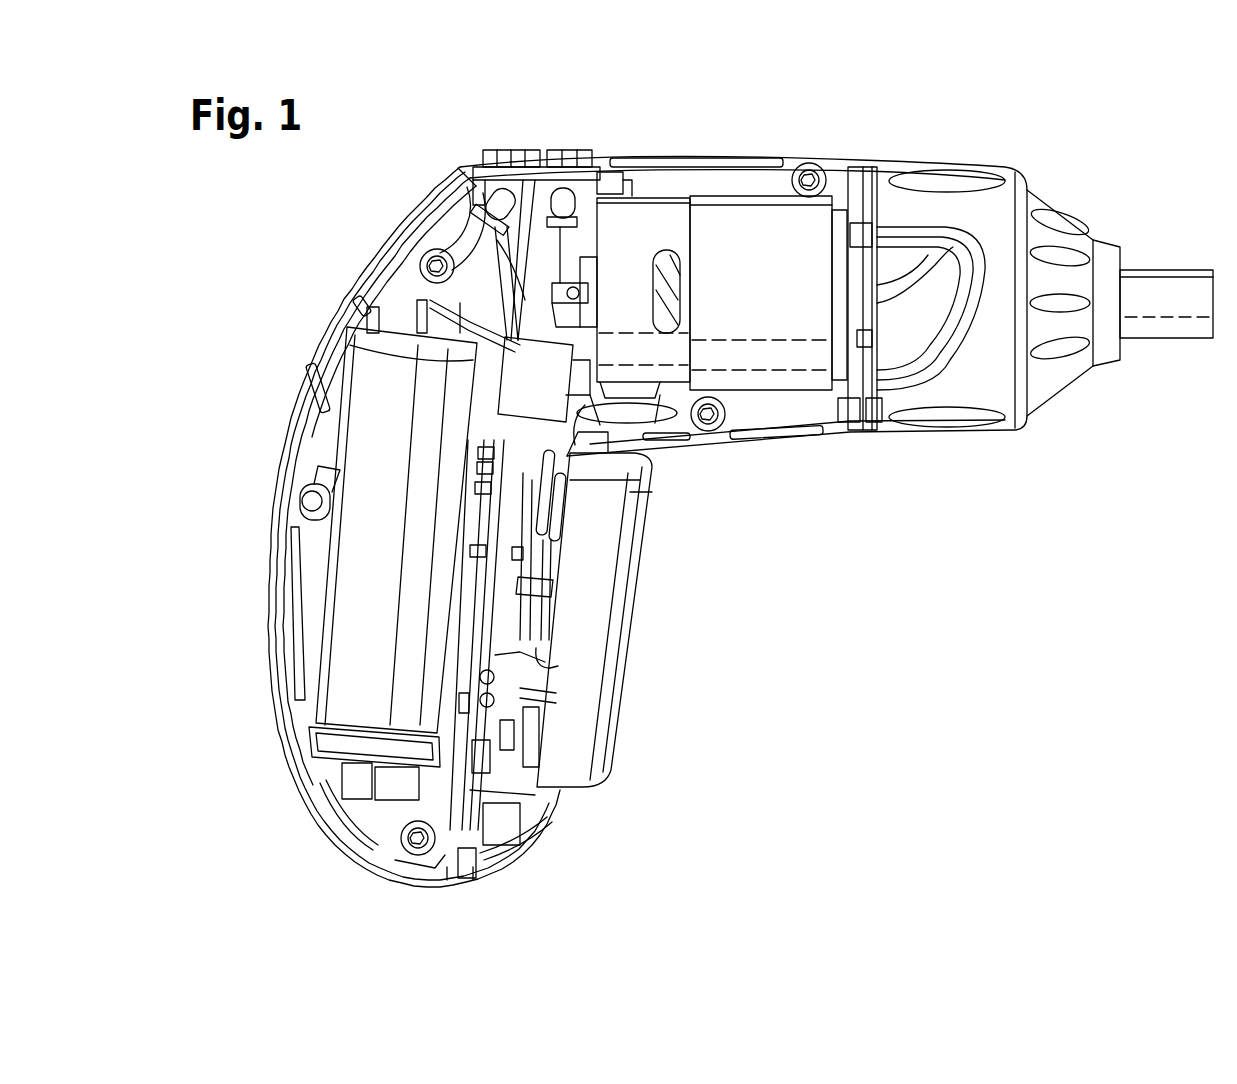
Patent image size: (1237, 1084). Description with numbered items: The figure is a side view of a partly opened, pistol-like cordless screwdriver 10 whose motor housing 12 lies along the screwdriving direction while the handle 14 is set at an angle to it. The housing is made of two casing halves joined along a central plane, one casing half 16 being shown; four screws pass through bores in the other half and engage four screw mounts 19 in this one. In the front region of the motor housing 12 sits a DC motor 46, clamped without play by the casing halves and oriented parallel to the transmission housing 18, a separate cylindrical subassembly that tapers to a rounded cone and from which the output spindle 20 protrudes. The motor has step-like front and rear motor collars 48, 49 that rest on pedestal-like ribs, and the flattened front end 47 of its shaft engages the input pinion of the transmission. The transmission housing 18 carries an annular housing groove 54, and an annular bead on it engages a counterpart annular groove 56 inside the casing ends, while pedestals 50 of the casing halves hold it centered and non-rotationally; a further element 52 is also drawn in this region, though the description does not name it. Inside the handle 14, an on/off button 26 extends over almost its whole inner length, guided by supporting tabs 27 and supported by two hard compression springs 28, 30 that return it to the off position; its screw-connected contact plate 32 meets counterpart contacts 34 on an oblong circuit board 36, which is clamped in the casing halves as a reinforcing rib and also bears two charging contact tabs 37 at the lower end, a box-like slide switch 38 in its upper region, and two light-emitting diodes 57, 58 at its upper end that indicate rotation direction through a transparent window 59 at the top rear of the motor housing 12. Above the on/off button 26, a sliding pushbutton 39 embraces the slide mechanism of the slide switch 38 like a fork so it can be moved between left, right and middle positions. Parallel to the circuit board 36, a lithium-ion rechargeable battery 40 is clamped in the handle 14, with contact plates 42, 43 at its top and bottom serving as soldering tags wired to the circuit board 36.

The cordless screwdriver 10 is at (1084, 152).
The motor housing 12 is at (693, 157).
The handle 14 is at (277, 518).
The casing half 16 is at (740, 160).
The transmission housing 18 is at (902, 200).
The screw mount 19 is at (810, 170).
The output spindle 20 is at (1168, 287).
The on/off button 26 is at (580, 600).
The supporting tab 27 is at (547, 583).
The compression spring 28 is at (562, 508).
The compression spring 30 is at (537, 730).
The contact plate 32 is at (543, 660).
The counterpart contact 34 is at (543, 693).
The circuit board 36 is at (463, 860).
The charging contact tab 37 is at (490, 818).
The slide switch 38 is at (540, 387).
The sliding pushbutton 39 is at (640, 417).
The rechargeable battery 40 is at (380, 403).
The contact plate 42 is at (323, 787).
The contact plate 43 is at (460, 313).
The DC motor 46 is at (630, 233).
The front end of the motor shaft 47 is at (945, 258).
The front motor collar 48 is at (920, 257).
The rear motor collar 49 is at (585, 255).
The pedestal 50 is at (881, 233).
The sensor 52 is at (627, 173).
The annular housing groove 54 is at (847, 420).
The counterpart annular groove 56 is at (880, 418).
The light-emitting diode 57 is at (493, 180).
The light-emitting diode 58 is at (545, 188).
The transparent window 59 is at (495, 148).